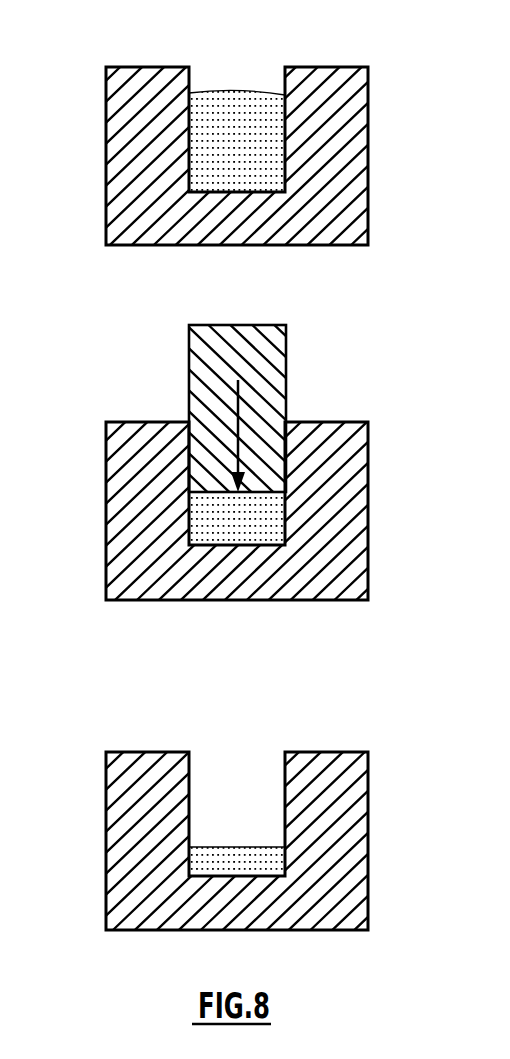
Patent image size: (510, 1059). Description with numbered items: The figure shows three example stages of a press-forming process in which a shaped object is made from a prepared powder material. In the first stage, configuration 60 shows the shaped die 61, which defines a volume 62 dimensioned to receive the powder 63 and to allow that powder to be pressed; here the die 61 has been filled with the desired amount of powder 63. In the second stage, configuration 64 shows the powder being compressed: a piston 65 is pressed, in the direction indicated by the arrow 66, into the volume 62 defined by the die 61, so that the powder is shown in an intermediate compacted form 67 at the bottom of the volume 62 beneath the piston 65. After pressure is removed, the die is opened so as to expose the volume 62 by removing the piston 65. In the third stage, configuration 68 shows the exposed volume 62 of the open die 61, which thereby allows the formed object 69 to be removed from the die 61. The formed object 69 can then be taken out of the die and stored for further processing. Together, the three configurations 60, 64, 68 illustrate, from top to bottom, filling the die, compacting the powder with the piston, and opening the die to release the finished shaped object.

The configuration 60 is at (232, 133).
The shaped die 61 is at (370, 174).
The volume 62 is at (261, 68).
The powder 63 is at (226, 113).
The configuration 64 is at (218, 462).
The piston 65 is at (287, 395).
The arrow 66 is at (236, 401).
The intermediate compacted form 67 is at (258, 519).
The configuration 68 is at (198, 841).
The formed object 69 is at (233, 860).